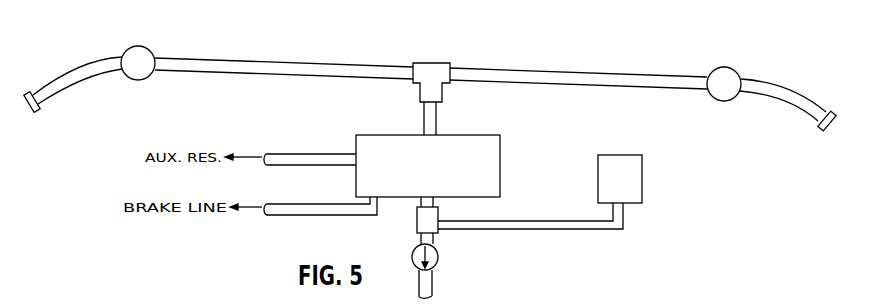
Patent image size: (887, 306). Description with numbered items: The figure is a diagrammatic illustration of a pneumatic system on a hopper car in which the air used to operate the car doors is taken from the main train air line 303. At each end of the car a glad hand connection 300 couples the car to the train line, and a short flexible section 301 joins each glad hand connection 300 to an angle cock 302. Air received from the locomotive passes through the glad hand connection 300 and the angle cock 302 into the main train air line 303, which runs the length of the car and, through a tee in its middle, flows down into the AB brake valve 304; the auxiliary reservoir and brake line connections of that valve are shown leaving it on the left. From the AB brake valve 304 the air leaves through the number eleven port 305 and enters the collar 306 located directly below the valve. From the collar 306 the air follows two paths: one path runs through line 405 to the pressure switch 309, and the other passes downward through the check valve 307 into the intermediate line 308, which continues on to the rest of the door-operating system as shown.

The glad hand connection 300 is at (42, 111).
The flexible hose 301 is at (97, 72).
The angle cock 302 is at (153, 52).
The main train air line 303 is at (337, 64).
The AB brake valve 304 is at (487, 136).
The No. 11 Port 305 is at (428, 197).
The collar 306 is at (416, 218).
The check valve 307 is at (439, 254).
The intermediate line 308 is at (428, 286).
The pressure switch 309 is at (632, 151).
The line 405 is at (558, 230).